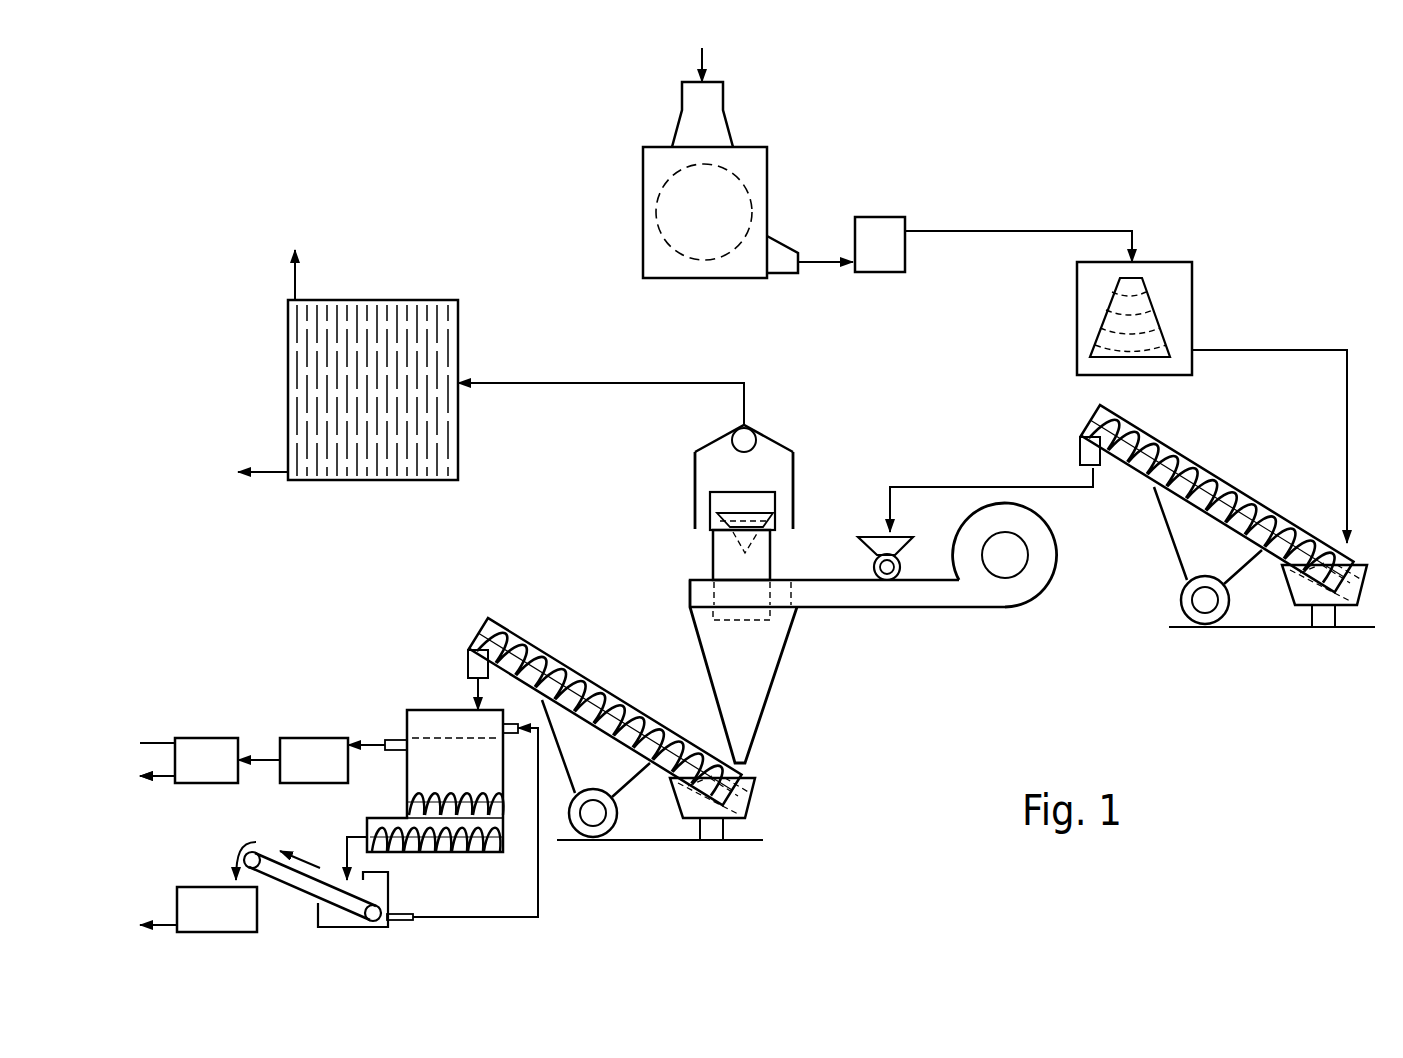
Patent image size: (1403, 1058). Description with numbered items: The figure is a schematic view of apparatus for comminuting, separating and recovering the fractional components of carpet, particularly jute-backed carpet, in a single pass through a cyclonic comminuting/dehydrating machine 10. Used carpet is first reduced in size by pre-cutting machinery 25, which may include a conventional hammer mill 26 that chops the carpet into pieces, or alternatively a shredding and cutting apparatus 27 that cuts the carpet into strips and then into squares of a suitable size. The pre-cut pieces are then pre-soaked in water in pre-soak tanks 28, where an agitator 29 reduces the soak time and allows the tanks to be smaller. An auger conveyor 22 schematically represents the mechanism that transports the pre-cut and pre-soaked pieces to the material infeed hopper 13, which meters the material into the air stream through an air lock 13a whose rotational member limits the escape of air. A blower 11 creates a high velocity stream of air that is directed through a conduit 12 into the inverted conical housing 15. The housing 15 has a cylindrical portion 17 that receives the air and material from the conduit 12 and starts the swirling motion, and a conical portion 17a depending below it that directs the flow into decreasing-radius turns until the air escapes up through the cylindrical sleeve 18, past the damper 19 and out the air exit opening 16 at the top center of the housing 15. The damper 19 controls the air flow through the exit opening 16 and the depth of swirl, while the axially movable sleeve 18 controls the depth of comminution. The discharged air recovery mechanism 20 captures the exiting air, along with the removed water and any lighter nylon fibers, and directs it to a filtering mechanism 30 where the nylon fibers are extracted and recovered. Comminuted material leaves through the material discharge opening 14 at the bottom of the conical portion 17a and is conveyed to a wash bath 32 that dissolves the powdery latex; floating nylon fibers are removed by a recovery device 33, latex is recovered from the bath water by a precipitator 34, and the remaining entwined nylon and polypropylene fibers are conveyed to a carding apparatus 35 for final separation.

The cyclonic comminuting/dehydrating machine 10 is at (643, 515).
The blower 11 is at (1000, 608).
The conduit 12 is at (852, 608).
The material infeed hopper 13 is at (860, 538).
The air lock 13a is at (875, 567).
The material discharge opening 14 is at (748, 762).
The inverted conical housing 15 is at (795, 685).
The air exit opening 16 is at (735, 487).
The cylindrical portion 17 is at (690, 598).
The conical portion 17a is at (712, 680).
The cylindrical sleeve 18 is at (713, 562).
The damper 19 is at (732, 513).
The discharged air recovery mechanism 20 is at (744, 425).
The auger conveyor 22 is at (540, 660).
The pre-cutting machinery 25 is at (880, 122).
The hammer mill 26 is at (645, 150).
The shredding and cutting apparatus 27 is at (873, 217).
The pre-soak tank 28 is at (1192, 278).
The agitator 29 is at (1105, 314).
The filtering mechanism 30 is at (458, 322).
The wash bath 32 is at (430, 710).
The recovery device 33 is at (318, 738).
The precipitator 34 is at (210, 738).
The carding apparatus 35 is at (200, 887).